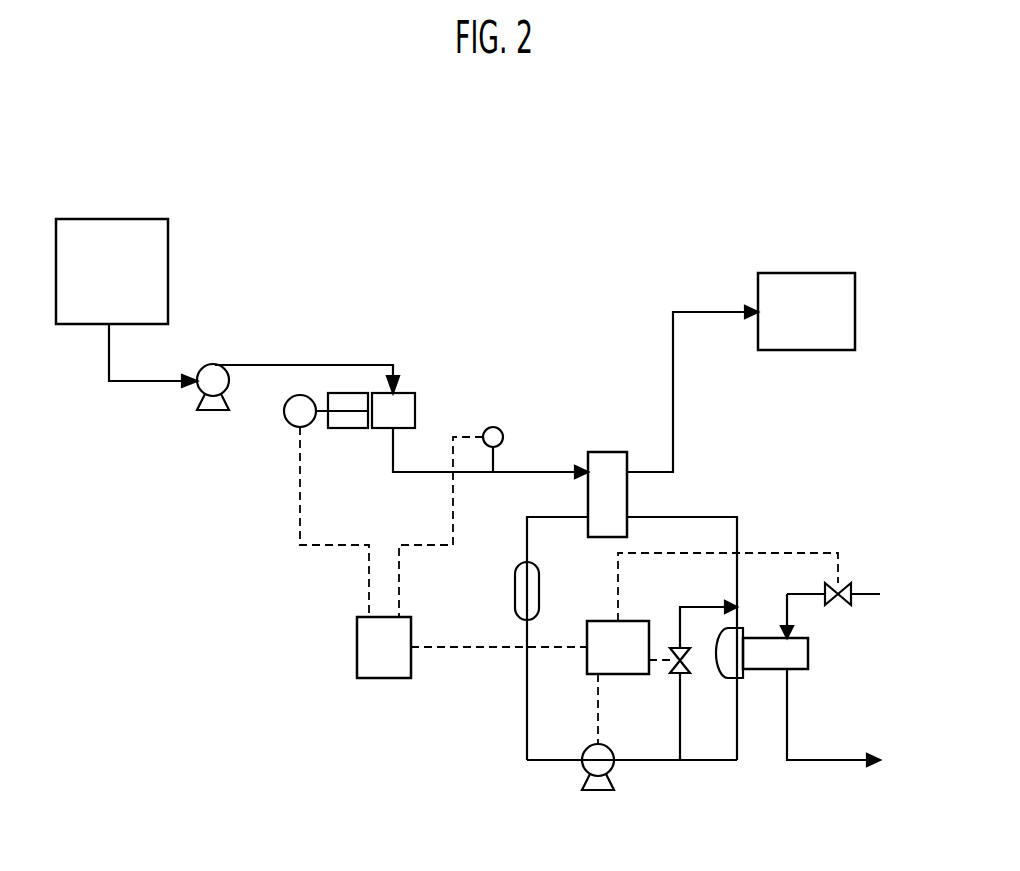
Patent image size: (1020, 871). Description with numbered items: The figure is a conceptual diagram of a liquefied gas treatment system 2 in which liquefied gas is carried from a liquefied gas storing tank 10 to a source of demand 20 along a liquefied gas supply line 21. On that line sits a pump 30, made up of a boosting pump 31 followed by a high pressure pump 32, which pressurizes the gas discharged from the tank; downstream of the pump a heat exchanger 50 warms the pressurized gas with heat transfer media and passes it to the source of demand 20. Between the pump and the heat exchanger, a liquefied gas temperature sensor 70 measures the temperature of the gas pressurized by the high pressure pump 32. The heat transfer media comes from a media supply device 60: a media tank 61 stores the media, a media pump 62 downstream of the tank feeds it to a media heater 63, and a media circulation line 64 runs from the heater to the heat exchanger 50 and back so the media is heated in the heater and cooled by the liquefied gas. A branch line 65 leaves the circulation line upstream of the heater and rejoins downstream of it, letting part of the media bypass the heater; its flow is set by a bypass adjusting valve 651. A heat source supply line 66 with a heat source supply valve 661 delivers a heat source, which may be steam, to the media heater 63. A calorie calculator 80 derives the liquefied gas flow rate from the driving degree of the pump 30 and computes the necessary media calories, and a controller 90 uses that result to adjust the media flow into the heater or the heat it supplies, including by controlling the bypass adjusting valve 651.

The liquefied gas treatment system 2 is at (634, 188).
The liquefied gas storing tank 10 is at (135, 219).
The source of demand 20 is at (815, 273).
The liquefied gas supply line 21 is at (131, 393).
The pump 30 is at (332, 292).
The boosting pump 31 is at (220, 366).
The high pressure pump 32 is at (354, 393).
The heat exchanger 50 is at (612, 452).
The media supply device 60 is at (521, 767).
The media tank 61 is at (515, 594).
The media pump 62 is at (600, 792).
The media heater 63 is at (762, 672).
The media circulation line 64 is at (703, 762).
The branch line 65 is at (705, 607).
The bypass adjusting valve 651 is at (686, 677).
The heat source supply line 66 is at (835, 762).
The heat source supply valve 661 is at (840, 584).
The liquefied gas temperature sensor 70 is at (492, 427).
The calorie calculator 80 is at (357, 648).
The controller 90 is at (628, 674).